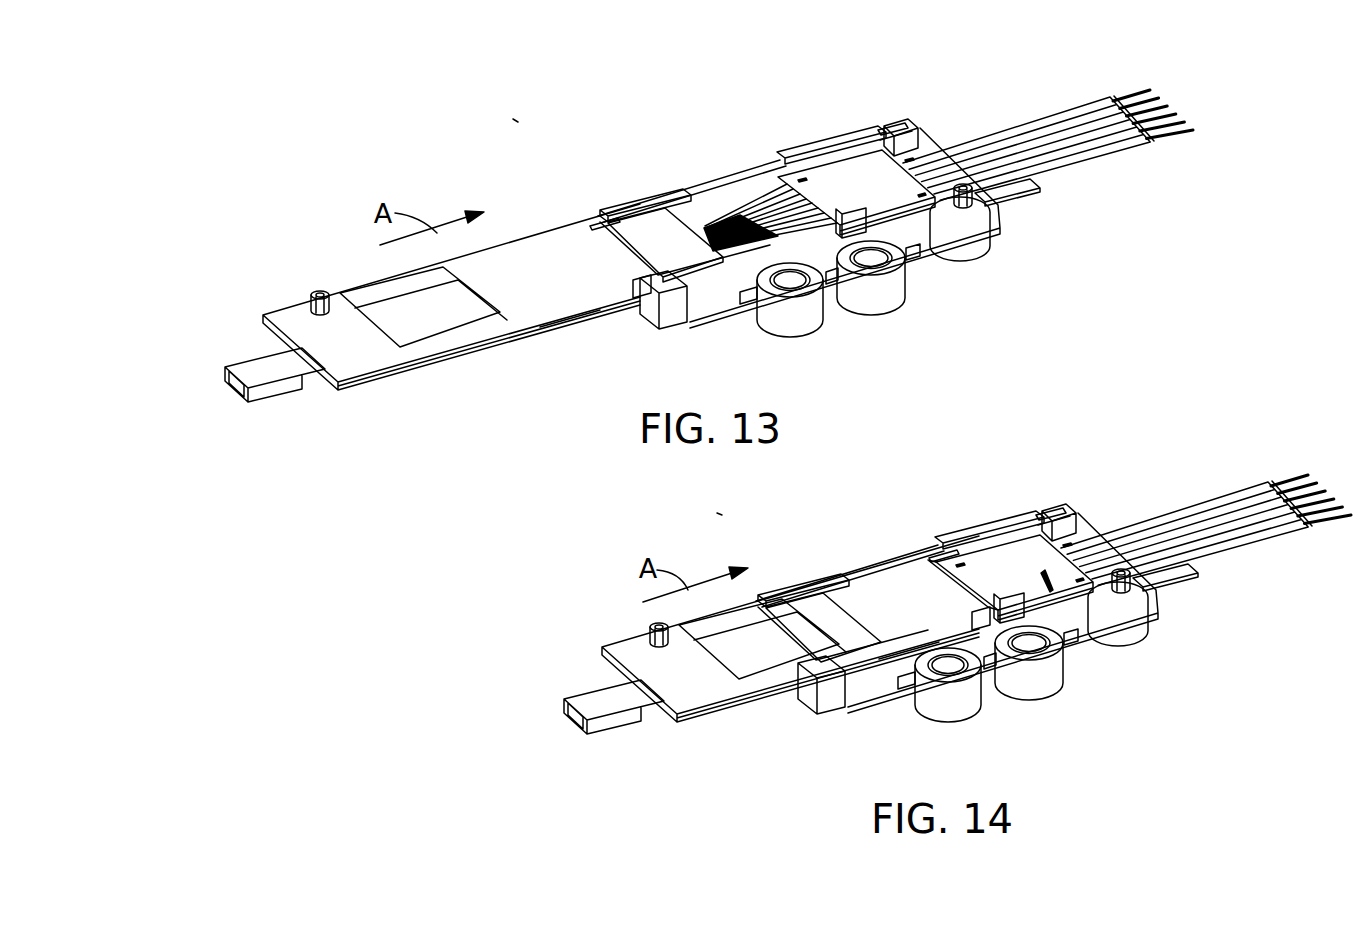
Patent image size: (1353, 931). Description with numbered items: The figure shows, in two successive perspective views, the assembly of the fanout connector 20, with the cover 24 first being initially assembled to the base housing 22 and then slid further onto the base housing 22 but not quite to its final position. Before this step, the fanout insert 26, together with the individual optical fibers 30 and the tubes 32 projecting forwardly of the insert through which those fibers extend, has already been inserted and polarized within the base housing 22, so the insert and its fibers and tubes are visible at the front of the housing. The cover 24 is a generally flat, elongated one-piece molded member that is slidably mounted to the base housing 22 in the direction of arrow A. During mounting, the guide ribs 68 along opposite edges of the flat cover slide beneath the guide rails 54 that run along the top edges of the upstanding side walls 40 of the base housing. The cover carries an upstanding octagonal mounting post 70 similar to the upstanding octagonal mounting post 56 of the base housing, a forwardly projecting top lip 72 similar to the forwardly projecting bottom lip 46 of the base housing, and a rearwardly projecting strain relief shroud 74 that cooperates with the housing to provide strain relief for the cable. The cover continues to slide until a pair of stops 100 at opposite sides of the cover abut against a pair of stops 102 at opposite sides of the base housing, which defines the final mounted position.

In FIG. 13, the fanout connector 20 is at (505, 117).
In FIG. 14, the fanout connector 20 is at (708, 511).
In FIG. 13, the base housing 22 is at (919, 110).
In FIG. 14, the base housing 22 is at (1059, 522).
In FIG. 13, the cover 24 is at (557, 339).
In FIG. 14, the cover 24 is at (699, 736).
In FIG. 13, the fanout insert 26 is at (846, 180).
In FIG. 14, the fanout insert 26 is at (1095, 615).
In FIG. 13, the optical fibers 30 is at (745, 168).
In FIG. 14, the optical fibers 30 is at (1285, 485).
In FIG. 13, the tubes 32 is at (1045, 123).
In FIG. 14, the tubes 32 is at (1200, 523).
In FIG. 13, the side walls 40 is at (790, 160).
In FIG. 14, the side walls 40 is at (1000, 522).
In FIG. 13, the bottom lip 46 is at (1033, 187).
In FIG. 14, the bottom lip 46 is at (1203, 570).
In FIG. 13, the guide rails 54 is at (645, 200).
In FIG. 14, the guide rails 54 is at (803, 592).
In FIG. 13, the mounting post 56 is at (970, 200).
In FIG. 14, the mounting post 56 is at (1140, 602).
In FIG. 13, the guide ribs 68 is at (458, 352).
In FIG. 14, the guide ribs 68 is at (603, 650).
In FIG. 13, the mounting post 70 is at (320, 303).
In FIG. 14, the mounting post 70 is at (645, 637).
In FIG. 13, the top lip 72 is at (683, 248).
In FIG. 14, the top lip 72 is at (990, 567).
In FIG. 13, the strain relief shroud 74 is at (262, 370).
In FIG. 14, the strain relief shroud 74 is at (593, 707).
In FIG. 13, the stops 100 is at (590, 227).
In FIG. 14, the stops 100 is at (925, 556).
In FIG. 13, the stops 102 is at (880, 135).
In FIG. 14, the stops 102 is at (1032, 520).